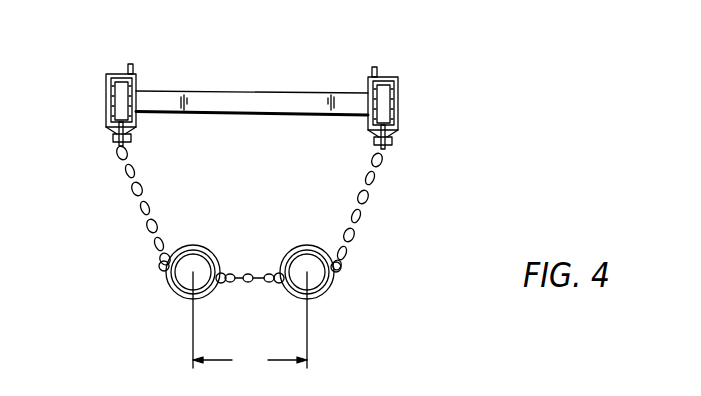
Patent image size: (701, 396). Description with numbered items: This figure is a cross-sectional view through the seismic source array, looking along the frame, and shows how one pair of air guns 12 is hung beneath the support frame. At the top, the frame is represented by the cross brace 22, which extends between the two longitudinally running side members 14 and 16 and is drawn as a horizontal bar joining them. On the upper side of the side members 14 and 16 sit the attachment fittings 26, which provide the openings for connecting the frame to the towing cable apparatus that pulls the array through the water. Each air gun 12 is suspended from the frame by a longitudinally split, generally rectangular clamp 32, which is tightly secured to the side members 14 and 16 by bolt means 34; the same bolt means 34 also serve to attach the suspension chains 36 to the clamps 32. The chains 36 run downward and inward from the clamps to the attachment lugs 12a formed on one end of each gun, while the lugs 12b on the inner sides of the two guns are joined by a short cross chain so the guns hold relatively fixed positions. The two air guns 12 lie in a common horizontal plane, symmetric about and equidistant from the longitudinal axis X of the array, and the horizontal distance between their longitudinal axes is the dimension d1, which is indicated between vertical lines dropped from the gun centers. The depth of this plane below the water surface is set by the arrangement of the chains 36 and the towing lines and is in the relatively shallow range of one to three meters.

The air gun 12 is at (179, 306).
The attachment lug 12a is at (161, 269).
The attachment lug 12b is at (219, 287).
The side member 14 is at (409, 103).
The side member 16 is at (99, 85).
The cross brace 22 is at (257, 96).
The attachment fitting 26 is at (134, 64).
The clamp 32 is at (399, 80).
The bolt means 34 is at (390, 141).
The suspension chain 36 is at (136, 196).
The longitudinal axis X is at (250, 270).
The horizontal distance d1 is at (250, 362).